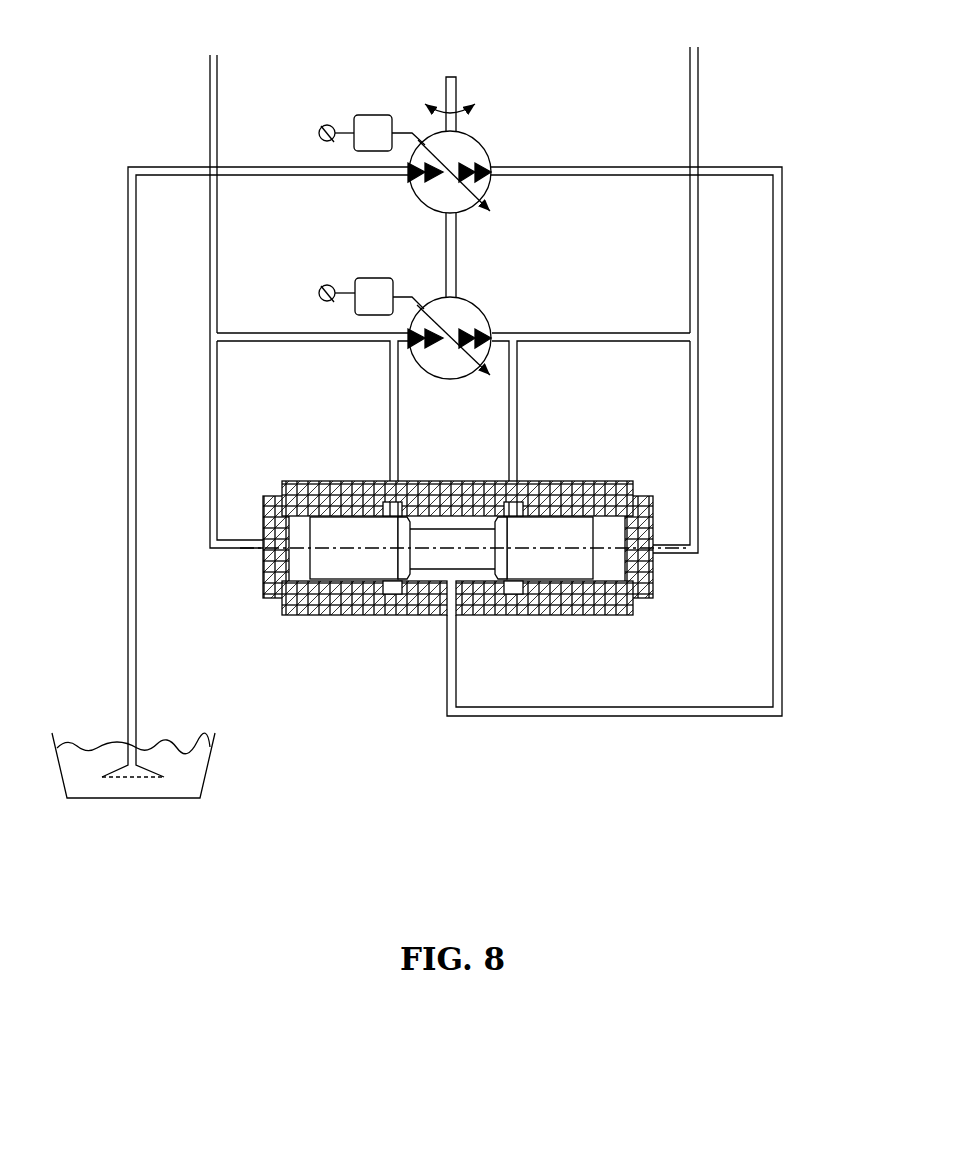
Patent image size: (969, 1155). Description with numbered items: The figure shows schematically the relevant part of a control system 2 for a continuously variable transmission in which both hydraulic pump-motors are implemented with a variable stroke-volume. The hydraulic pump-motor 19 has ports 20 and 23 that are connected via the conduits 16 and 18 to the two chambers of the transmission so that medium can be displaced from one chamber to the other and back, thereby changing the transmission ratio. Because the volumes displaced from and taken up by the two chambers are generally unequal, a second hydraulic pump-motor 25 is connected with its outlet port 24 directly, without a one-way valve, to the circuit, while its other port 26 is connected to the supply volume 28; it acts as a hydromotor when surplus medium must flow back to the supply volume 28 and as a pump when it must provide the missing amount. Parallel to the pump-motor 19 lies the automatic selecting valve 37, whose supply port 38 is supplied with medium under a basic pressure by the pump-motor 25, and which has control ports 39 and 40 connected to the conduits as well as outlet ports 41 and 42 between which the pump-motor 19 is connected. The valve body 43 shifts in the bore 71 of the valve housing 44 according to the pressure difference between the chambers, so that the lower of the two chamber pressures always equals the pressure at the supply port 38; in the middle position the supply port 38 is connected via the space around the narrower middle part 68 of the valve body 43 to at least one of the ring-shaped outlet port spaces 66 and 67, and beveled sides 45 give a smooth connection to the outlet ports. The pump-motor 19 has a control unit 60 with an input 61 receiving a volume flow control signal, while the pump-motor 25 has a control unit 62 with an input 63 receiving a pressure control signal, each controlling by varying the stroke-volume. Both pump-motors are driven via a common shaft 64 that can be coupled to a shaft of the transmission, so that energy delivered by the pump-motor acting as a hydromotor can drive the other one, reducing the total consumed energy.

The control system 2 is at (442, 430).
The conduit 16 is at (694, 76).
The conduit 18 is at (208, 68).
The hydraulic pump-motor 19 is at (466, 310).
The port 20 is at (497, 330).
The port 23 is at (408, 345).
The outlet port 24 is at (497, 163).
The second hydraulic pump-motor 25 is at (460, 143).
The port 26 is at (403, 184).
The supply volume 28 is at (215, 781).
The automatic selecting valve 37 is at (452, 545).
The supply port 38 is at (462, 620).
The control port 39 is at (656, 558).
The control port 40 is at (254, 557).
The outlet port 41 is at (521, 479).
The outlet port 42 is at (385, 479).
The valve body 43 is at (312, 612).
The valve housing 44 is at (307, 495).
The beveled sides 45 is at (497, 512).
The control unit 60 is at (370, 291).
The input 61 is at (319, 293).
The control unit 62 is at (367, 120).
The input 63 is at (319, 133).
The common shaft 64 is at (456, 77).
The outlet port space 66 is at (527, 592).
The outlet port space 67 is at (387, 598).
The narrower middle part 68 is at (465, 605).
The bore 71 is at (273, 595).